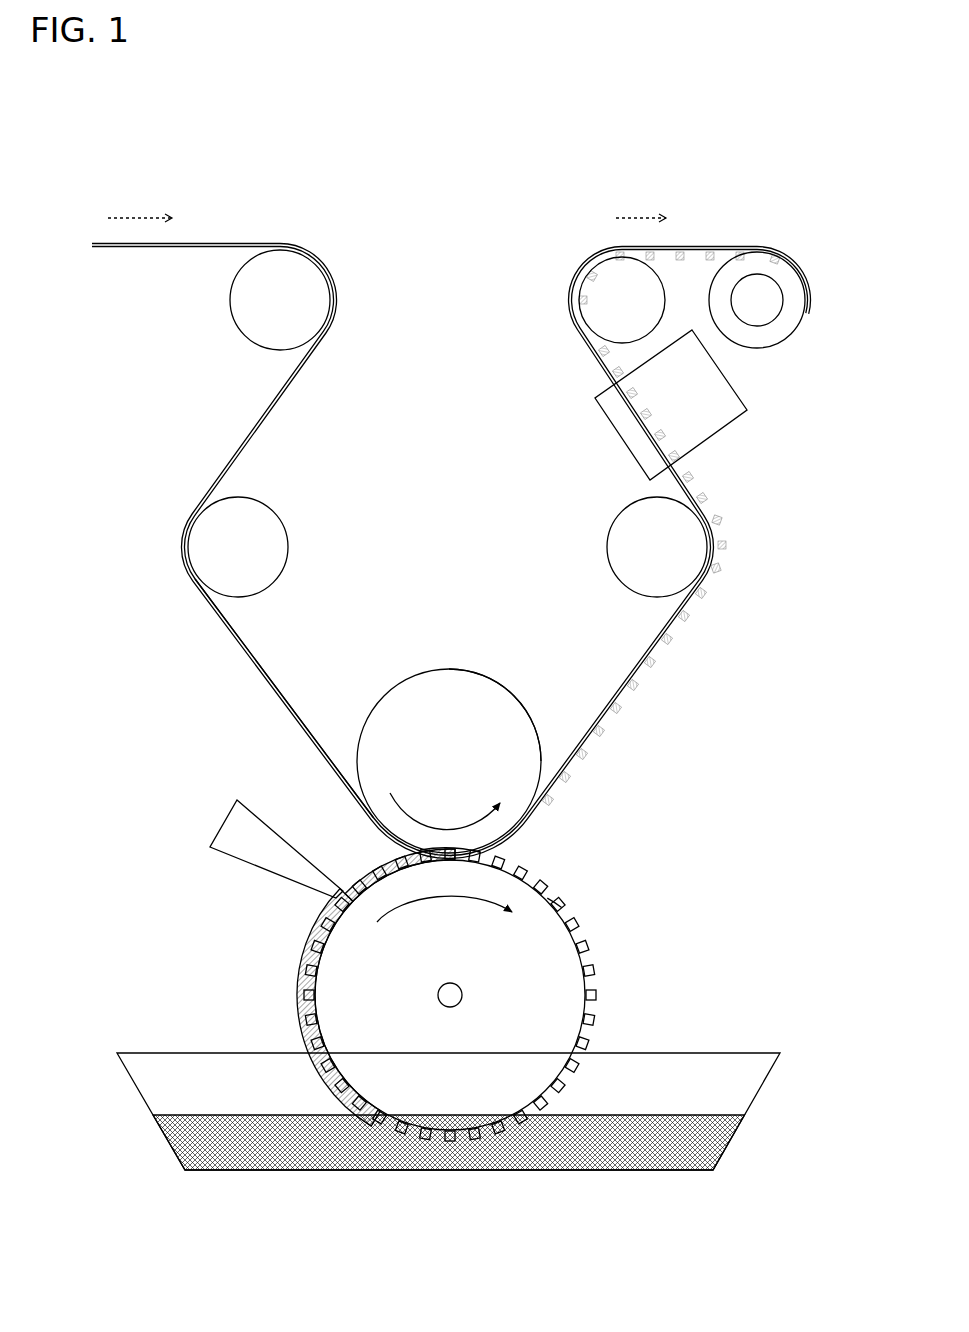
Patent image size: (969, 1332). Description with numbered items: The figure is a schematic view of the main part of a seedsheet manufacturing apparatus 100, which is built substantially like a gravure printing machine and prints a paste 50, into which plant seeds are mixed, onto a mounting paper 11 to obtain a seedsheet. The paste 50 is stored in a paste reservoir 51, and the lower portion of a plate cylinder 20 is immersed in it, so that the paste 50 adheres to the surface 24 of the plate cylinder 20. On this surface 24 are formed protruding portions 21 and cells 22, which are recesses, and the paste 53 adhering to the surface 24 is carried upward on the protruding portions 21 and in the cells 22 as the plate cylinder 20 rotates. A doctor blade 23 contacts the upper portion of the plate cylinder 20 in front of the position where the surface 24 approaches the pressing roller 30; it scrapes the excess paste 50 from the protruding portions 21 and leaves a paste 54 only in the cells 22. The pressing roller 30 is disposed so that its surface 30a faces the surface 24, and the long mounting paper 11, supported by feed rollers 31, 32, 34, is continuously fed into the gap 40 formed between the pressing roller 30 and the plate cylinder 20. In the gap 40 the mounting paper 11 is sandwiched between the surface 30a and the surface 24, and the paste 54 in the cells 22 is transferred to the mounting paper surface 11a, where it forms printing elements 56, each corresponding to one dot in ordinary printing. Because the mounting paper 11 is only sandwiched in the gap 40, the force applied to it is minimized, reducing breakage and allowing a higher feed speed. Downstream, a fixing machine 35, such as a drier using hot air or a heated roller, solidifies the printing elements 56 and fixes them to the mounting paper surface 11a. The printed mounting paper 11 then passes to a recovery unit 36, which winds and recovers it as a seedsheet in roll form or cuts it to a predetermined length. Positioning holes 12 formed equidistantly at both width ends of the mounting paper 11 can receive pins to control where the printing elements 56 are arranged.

The seedsheet manufacturing apparatus 100 is at (364, 216).
The mounting paper 11 is at (313, 727).
The mounting paper surface 11a is at (263, 675).
The positioning holes 12 is at (735, 270).
The plate cylinder 20 is at (540, 990).
The protruding portions 21 is at (547, 897).
The cells 22 is at (553, 907).
The doctor blade 23 is at (238, 828).
The surface of the plate cylinder 24 is at (587, 805).
The pressing roller 30 is at (450, 697).
The surface of the pressing roller 30a is at (517, 697).
The feed roller 31 is at (280, 538).
The feed roller 32 is at (313, 290).
The feed roller 34 is at (607, 280).
The fixing machine 35 is at (705, 415).
The recovery unit 36 is at (754, 292).
The gap 40 is at (413, 857).
The paste 50 is at (593, 1140).
The paste reservoir 51 is at (753, 1100).
The paste adhering to the surface 53 is at (298, 980).
The paste in the cells 54 is at (380, 875).
The printing elements 56 is at (580, 772).